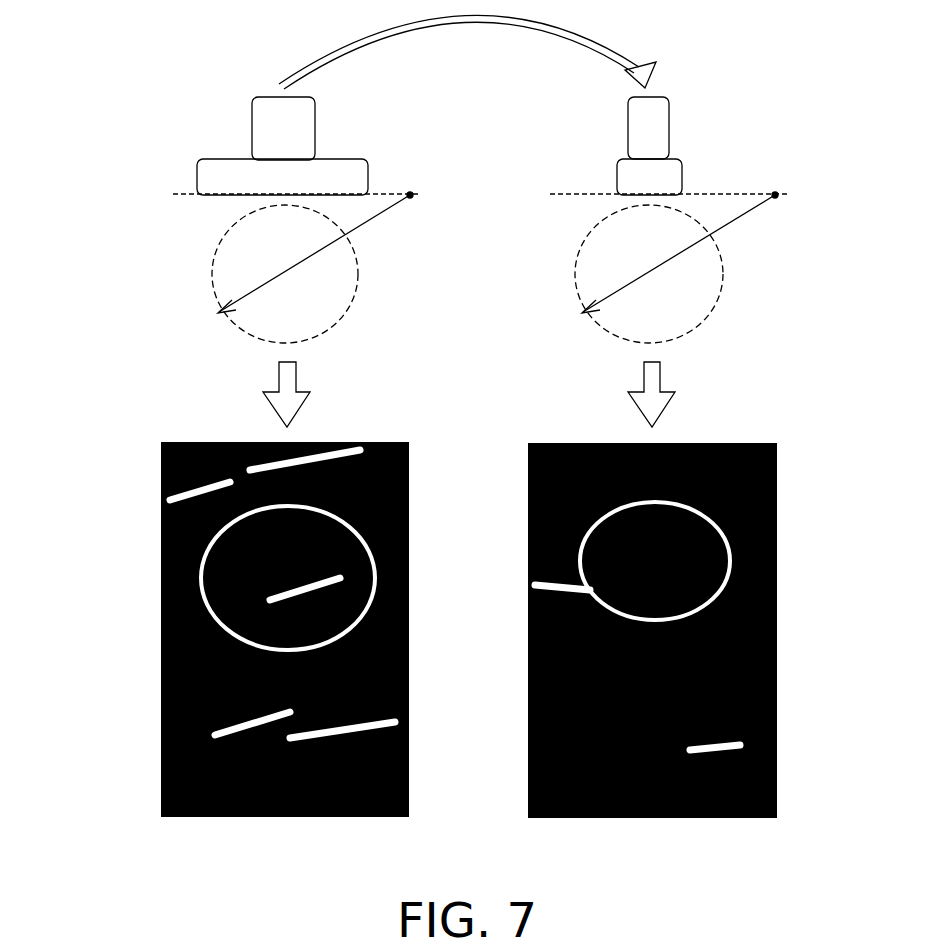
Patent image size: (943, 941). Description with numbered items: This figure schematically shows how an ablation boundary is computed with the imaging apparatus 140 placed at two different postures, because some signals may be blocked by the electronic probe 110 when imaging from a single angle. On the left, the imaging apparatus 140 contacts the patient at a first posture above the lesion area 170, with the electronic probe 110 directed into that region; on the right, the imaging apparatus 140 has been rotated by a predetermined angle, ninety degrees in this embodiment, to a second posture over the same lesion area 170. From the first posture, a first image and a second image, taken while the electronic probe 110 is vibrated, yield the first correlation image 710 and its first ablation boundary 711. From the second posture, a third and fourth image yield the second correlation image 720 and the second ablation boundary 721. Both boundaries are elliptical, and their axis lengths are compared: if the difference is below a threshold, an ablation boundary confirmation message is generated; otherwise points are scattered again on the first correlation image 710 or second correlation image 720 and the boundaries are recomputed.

The electronic probe 110 is at (250, 292).
The imaging apparatus 140 is at (252, 128).
The lesion area 170 is at (221, 250).
The first correlation image 710 is at (161, 600).
The first ablation boundary 711 is at (161, 560).
The second correlation image 720 is at (528, 634).
The second ablation boundary 721 is at (528, 528).